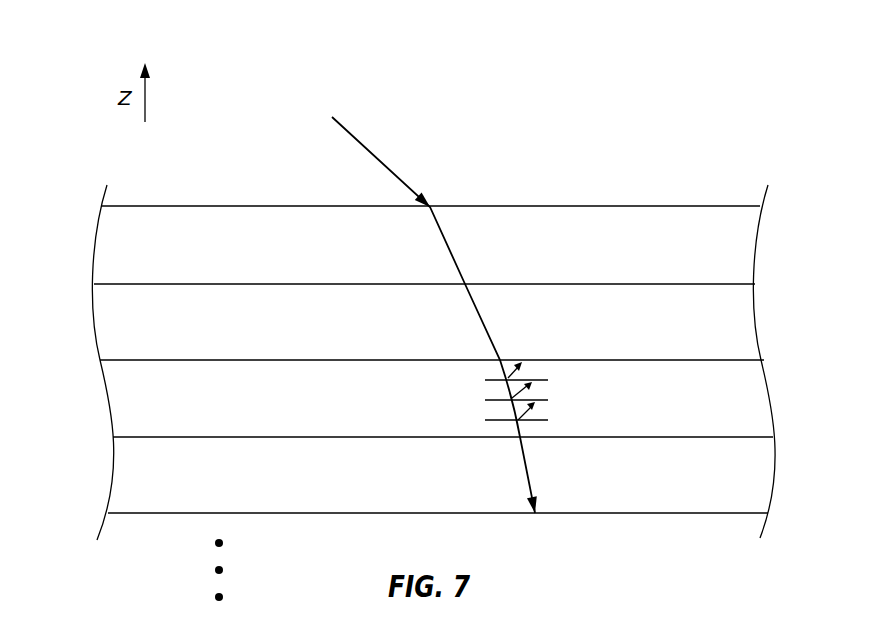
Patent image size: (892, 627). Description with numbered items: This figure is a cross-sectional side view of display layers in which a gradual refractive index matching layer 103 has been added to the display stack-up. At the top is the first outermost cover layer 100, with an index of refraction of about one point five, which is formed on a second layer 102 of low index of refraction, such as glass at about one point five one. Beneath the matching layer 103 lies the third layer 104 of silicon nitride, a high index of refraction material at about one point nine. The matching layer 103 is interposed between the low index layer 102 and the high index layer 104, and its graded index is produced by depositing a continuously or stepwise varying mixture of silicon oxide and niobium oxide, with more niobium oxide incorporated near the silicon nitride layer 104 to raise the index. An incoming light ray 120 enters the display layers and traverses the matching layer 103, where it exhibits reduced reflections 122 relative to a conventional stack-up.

The first outermost cover layer 100 is at (105, 244).
The second layer 102 is at (112, 323).
The gradual refractive index matching layer 103 is at (88, 362).
The third layer 104 is at (122, 470).
The incoming light ray 120 is at (365, 145).
The reduced reflections 122 is at (554, 383).